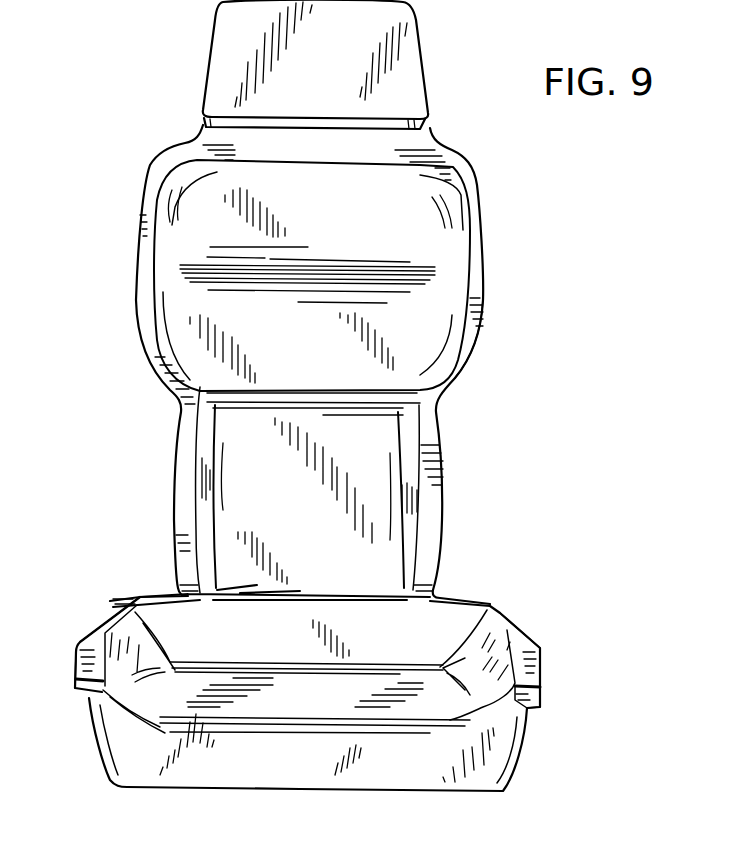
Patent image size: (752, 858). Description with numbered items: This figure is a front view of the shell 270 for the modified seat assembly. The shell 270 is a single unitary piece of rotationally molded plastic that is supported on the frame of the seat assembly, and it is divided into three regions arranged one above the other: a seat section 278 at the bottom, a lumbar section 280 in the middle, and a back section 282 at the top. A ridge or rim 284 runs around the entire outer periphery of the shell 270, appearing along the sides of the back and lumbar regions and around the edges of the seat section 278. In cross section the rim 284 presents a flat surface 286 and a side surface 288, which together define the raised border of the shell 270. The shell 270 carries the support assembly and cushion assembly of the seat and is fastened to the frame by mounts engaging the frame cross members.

The shell 270 is at (307, 395).
The seat section 278 is at (321, 707).
The lumbar section 280 is at (308, 507).
The back section 282 is at (336, 216).
The rim 284 is at (480, 285).
The flat surface 286 is at (517, 635).
The side surface 288 is at (542, 693).